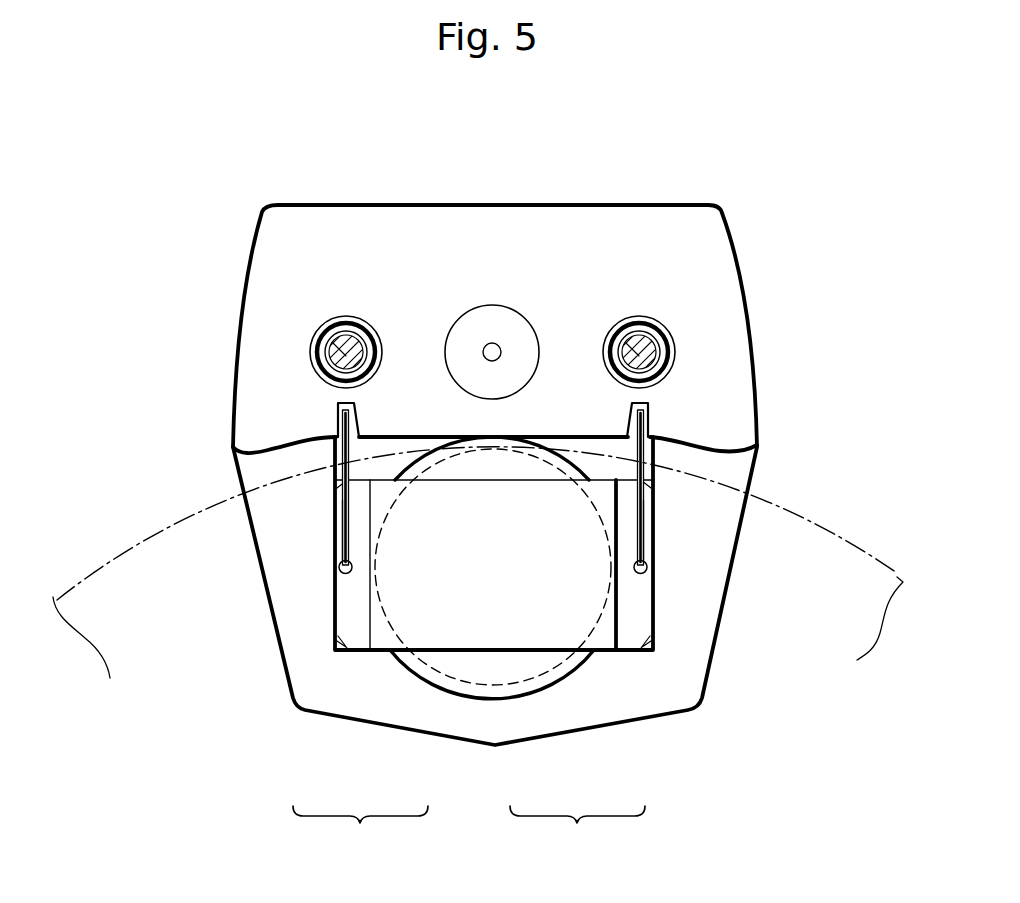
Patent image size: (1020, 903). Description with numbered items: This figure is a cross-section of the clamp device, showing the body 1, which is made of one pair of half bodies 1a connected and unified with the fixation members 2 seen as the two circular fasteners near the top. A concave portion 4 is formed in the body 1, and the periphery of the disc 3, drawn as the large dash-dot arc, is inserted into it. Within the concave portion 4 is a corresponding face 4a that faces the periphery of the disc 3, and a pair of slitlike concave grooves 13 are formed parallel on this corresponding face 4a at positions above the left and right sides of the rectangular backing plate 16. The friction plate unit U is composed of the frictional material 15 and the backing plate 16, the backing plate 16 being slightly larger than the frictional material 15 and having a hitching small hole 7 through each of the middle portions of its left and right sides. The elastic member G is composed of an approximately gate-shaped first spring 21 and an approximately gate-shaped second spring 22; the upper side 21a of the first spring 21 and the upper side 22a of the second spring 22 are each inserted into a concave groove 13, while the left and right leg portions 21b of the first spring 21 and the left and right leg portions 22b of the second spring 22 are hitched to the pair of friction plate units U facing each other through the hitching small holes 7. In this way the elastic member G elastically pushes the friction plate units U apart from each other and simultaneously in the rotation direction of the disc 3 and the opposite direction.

The body 1 is at (300, 175).
The half body 1a is at (641, 212).
The fixation member 2 is at (322, 330).
The disc 3 is at (143, 530).
The concave portion 4 is at (300, 616).
The corresponding face 4a is at (560, 437).
The hitching small hole 7 is at (345, 573).
The concave groove 13 is at (300, 441).
The frictional material 15 is at (447, 620).
The backing plate 16 is at (356, 627).
The first spring 21 is at (356, 508).
The upper side of the first spring 21a is at (338, 403).
The leg portion of the first spring 21b is at (340, 524).
The second spring 22 is at (630, 509).
The upper side of the second spring 22a is at (647, 410).
The leg portion of the second spring 22b is at (646, 536).
The friction plate unit U is at (360, 834).
The elastic member G is at (577, 834).